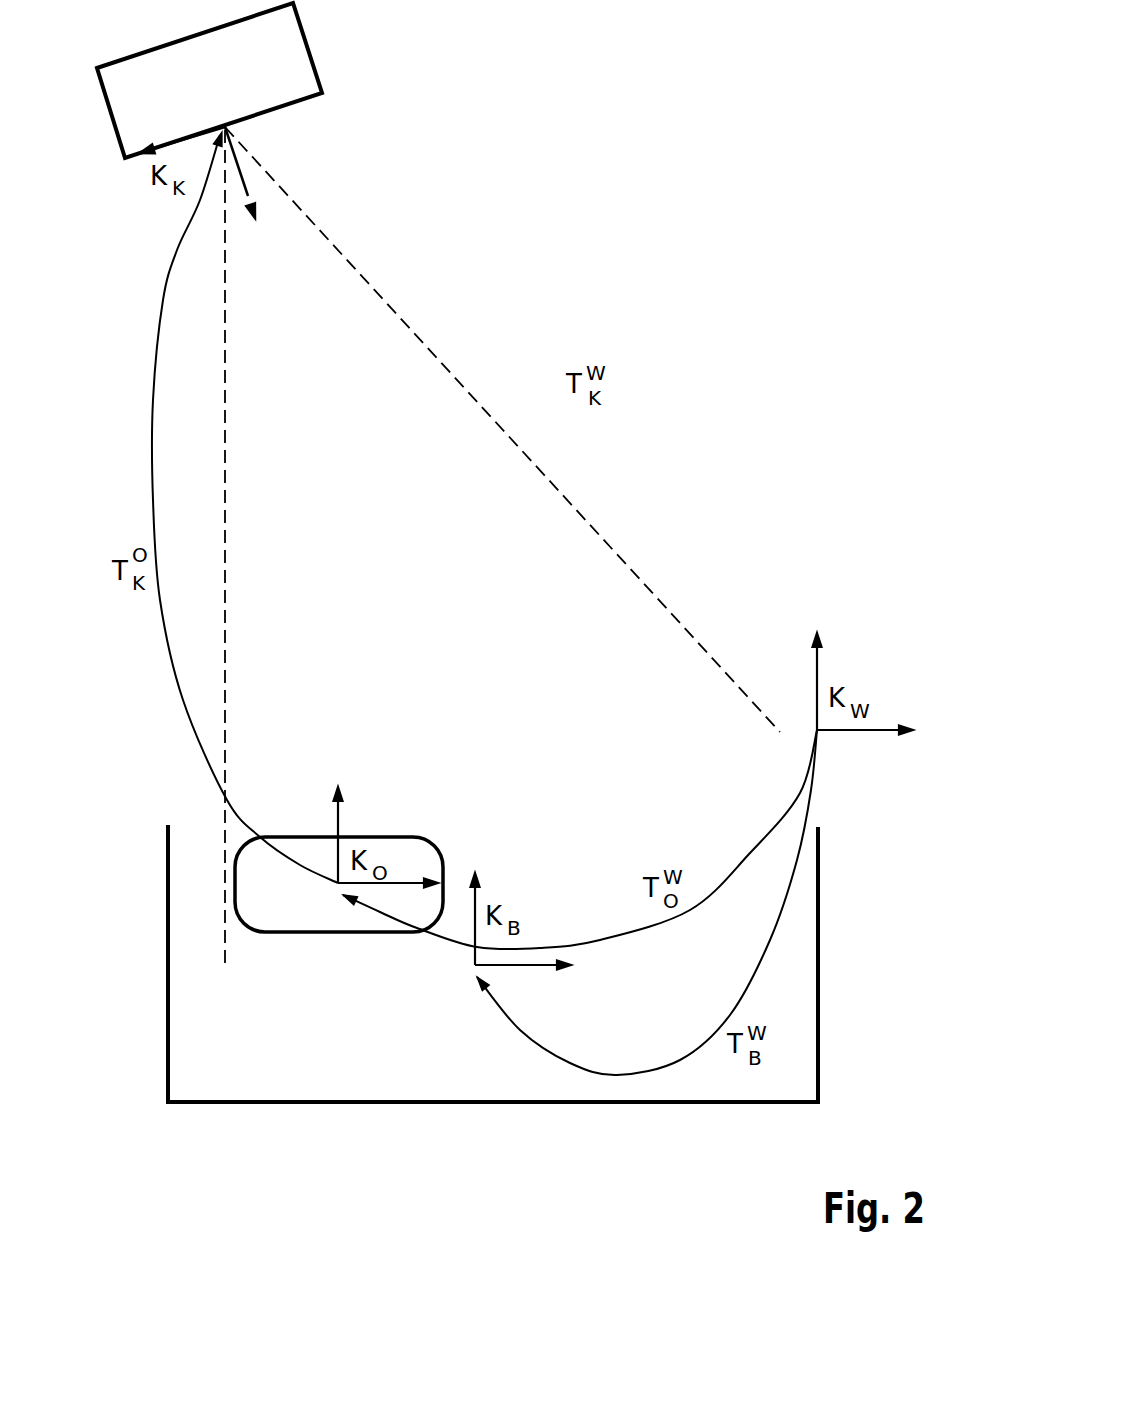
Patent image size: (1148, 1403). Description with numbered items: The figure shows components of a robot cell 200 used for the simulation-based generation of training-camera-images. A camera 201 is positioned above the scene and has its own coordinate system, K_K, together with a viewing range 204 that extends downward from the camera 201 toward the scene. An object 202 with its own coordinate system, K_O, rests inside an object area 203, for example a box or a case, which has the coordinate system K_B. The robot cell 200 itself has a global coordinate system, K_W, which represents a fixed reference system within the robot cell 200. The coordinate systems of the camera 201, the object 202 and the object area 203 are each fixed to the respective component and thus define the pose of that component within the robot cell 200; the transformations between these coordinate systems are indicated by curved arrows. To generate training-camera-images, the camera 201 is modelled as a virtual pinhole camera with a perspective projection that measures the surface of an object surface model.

The robot cell 200 is at (680, 232).
The camera 201 is at (313, 43).
The object 202 is at (386, 835).
The object area 203 is at (168, 960).
The viewing range 204 is at (403, 320).